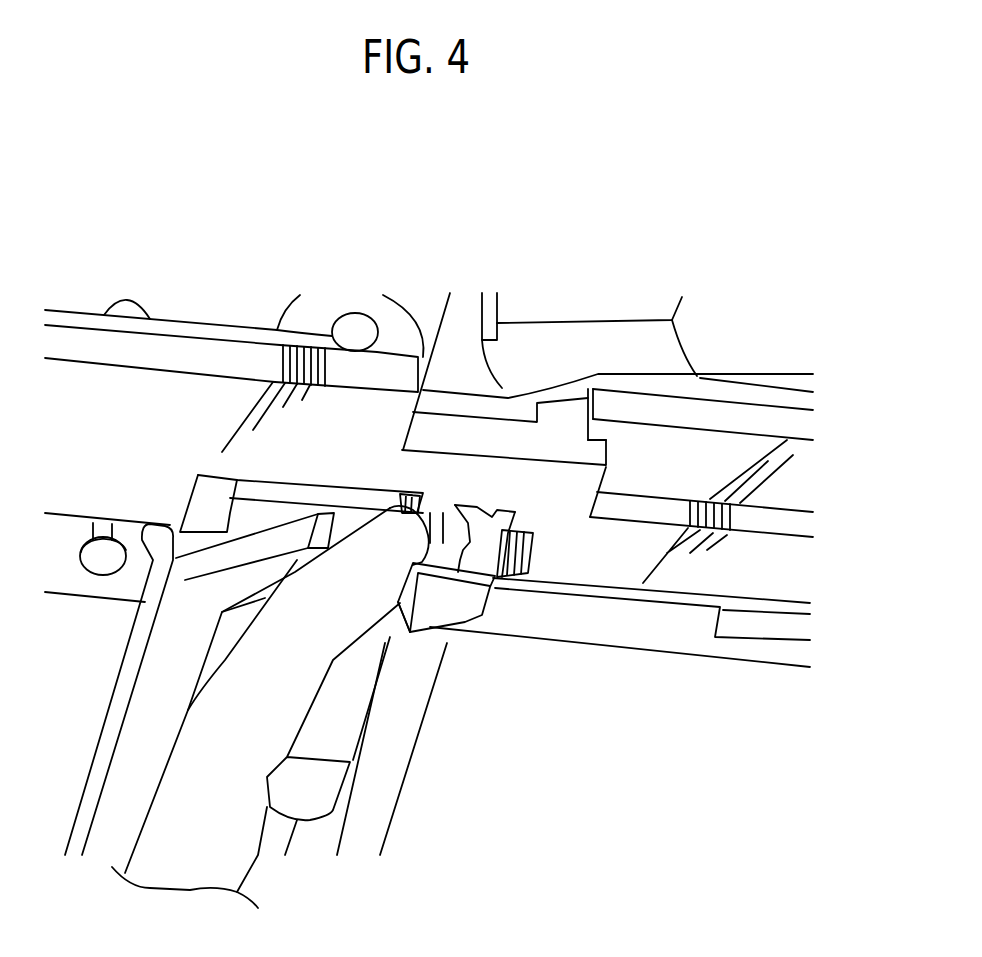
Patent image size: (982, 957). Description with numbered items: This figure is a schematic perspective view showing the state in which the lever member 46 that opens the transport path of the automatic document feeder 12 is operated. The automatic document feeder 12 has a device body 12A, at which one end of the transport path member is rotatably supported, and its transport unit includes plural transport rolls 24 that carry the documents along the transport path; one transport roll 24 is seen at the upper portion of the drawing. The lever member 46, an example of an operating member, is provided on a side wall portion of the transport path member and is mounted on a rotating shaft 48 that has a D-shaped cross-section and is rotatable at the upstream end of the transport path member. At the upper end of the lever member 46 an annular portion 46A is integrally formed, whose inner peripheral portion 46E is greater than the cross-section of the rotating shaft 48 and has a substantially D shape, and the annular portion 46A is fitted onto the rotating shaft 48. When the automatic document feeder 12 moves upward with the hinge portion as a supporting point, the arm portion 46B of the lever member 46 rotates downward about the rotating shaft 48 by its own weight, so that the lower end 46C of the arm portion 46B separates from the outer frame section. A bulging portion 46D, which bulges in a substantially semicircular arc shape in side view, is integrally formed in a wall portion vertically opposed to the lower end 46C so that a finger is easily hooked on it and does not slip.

The automatic document feeder 12 is at (641, 291).
The device body 12A is at (712, 399).
The transport roll 24 is at (413, 317).
The lever member 46 is at (474, 567).
The annular portion 46A is at (517, 513).
The arm portion 46B is at (467, 593).
The lower end 46C is at (417, 600).
The bulging portion 46D is at (398, 557).
The inner peripheral portion 46E is at (495, 505).
The rotating shaft 48 is at (492, 507).